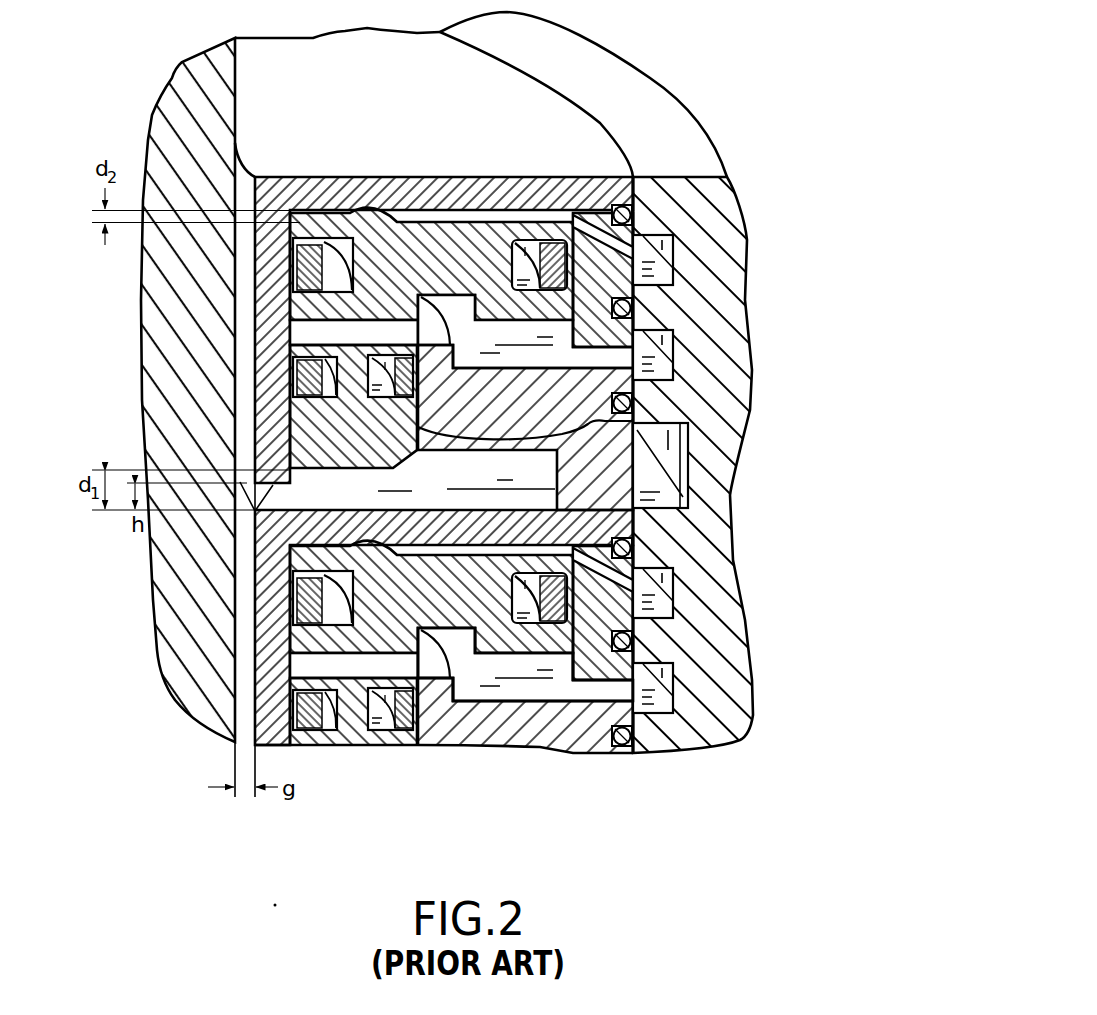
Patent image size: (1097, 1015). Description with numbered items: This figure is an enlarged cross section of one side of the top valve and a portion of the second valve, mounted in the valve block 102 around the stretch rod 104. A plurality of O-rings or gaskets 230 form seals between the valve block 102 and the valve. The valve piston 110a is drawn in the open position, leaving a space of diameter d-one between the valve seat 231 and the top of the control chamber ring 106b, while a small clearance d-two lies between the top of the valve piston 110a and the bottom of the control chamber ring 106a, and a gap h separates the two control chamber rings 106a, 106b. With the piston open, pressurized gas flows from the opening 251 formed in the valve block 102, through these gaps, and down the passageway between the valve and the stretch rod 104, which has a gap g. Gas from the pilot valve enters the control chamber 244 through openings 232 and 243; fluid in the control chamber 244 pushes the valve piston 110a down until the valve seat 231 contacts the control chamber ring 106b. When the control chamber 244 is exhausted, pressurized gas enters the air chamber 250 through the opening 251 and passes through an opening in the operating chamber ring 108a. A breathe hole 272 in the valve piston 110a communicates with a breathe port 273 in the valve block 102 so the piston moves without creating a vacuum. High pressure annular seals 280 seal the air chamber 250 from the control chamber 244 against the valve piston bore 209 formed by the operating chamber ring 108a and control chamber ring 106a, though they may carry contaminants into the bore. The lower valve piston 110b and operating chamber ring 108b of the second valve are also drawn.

The valve block 102 is at (693, 732).
The stretch rod 104 is at (160, 680).
The control chamber ring 106a is at (603, 125).
The control chamber ring 106b is at (633, 610).
The operating chamber ring 108a is at (635, 483).
The lower port 108b is at (633, 722).
The valve piston 110a is at (633, 421).
The lower passage 110b is at (527, 655).
The valve piston bore 209 is at (297, 460).
The O-rings or gaskets 230 is at (633, 220).
The valve seat 231 is at (431, 496).
The opening 232 is at (657, 267).
The opening 243 is at (583, 215).
The control chamber 244 is at (463, 207).
The air chamber 250 is at (427, 488).
The opening 251 is at (667, 498).
The breathe hole 272 is at (290, 362).
The breathe port 273 is at (660, 357).
The high pressure annular seals 280 is at (313, 398).